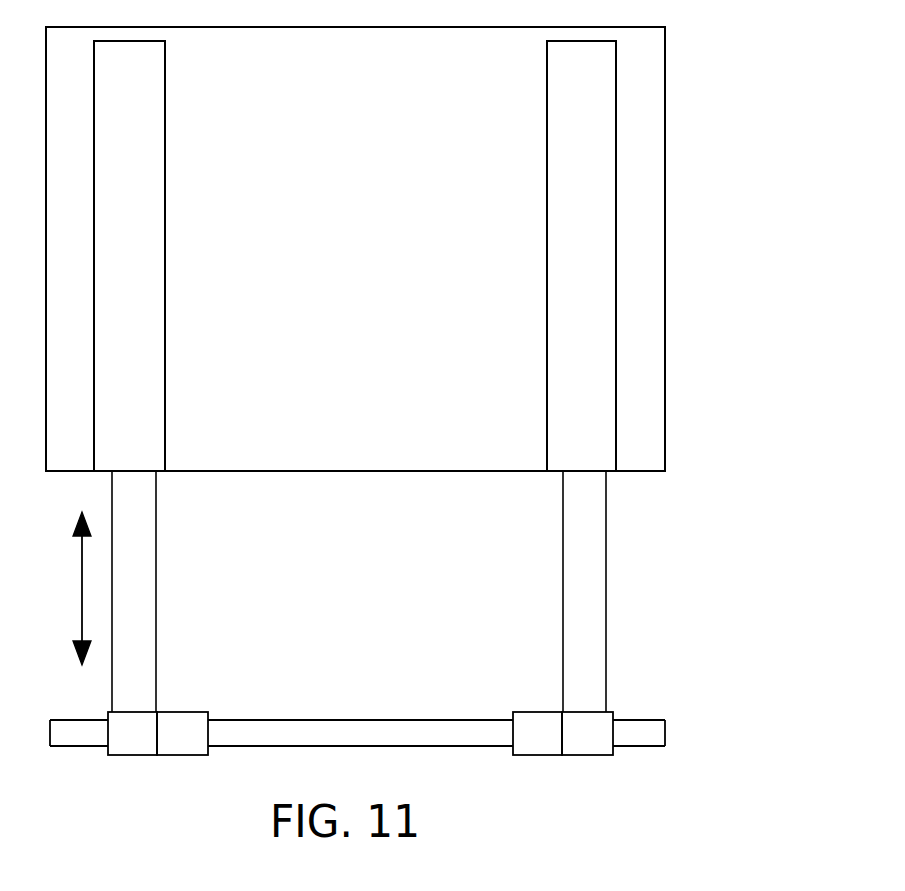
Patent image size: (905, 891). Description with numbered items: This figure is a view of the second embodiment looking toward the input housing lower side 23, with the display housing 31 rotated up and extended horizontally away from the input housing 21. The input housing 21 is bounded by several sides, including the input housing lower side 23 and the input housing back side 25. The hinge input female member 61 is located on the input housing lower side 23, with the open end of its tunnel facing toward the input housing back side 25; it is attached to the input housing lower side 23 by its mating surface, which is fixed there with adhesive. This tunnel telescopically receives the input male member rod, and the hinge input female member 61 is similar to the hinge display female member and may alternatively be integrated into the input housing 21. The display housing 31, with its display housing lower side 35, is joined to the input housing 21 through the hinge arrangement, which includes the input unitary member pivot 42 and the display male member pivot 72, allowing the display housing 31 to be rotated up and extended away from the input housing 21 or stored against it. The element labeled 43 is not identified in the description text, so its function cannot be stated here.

The input housing 21 is at (680, 86).
The input housing lower side 23 is at (647, 200).
The input housing back side 25 is at (430, 473).
The display housing 31 is at (357, 691).
The display housing lower side 35 is at (408, 733).
The input unitary member pivot 42 is at (586, 742).
The right leg 43 is at (590, 536).
The hinge input female member 61 is at (598, 382).
The display male member pivot 72 is at (534, 727).